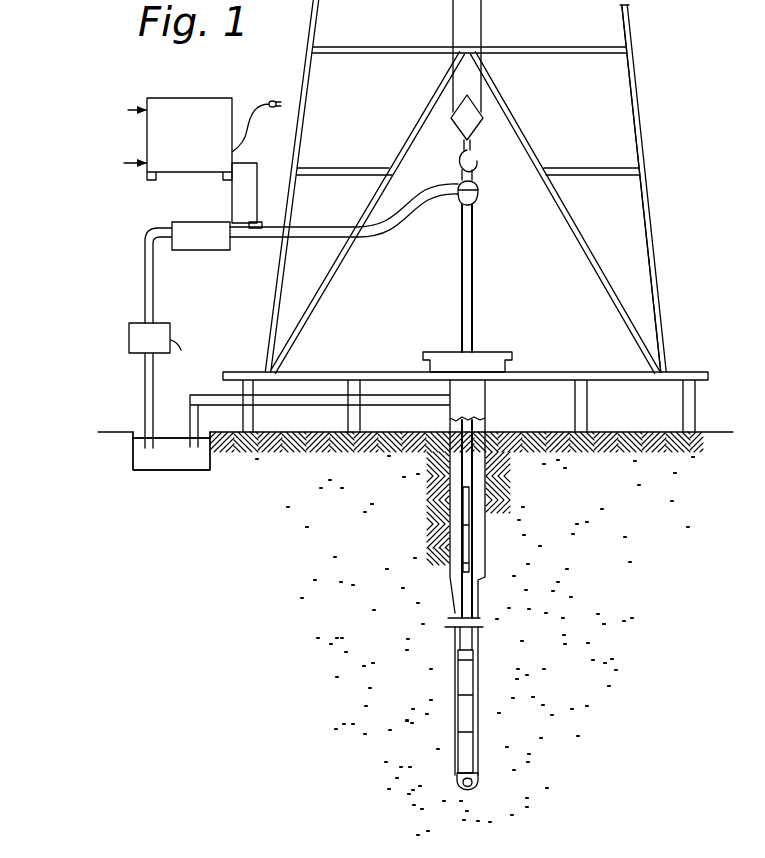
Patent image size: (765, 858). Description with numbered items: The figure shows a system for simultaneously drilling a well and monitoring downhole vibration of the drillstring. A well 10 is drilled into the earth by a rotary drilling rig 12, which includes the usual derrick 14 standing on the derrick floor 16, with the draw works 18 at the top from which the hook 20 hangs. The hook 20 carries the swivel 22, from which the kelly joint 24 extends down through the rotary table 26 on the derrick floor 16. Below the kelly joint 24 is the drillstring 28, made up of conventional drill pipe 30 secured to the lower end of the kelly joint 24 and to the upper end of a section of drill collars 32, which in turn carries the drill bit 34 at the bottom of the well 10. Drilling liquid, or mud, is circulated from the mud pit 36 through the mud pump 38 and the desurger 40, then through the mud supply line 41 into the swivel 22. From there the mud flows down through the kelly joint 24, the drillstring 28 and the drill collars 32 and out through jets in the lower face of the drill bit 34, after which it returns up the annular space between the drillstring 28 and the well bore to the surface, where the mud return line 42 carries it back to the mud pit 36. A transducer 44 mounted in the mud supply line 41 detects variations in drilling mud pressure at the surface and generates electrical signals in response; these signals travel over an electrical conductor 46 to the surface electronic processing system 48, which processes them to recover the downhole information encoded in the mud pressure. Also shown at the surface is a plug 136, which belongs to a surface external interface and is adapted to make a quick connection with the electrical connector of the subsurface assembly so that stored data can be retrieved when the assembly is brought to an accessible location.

The well 10 is at (452, 602).
The rotary drilling rig 12 is at (641, 77).
The derrick 14 is at (646, 131).
The derrick floor 16 is at (681, 370).
The draw works 18 is at (452, 22).
The hook 20 is at (473, 152).
The swivel 22 is at (458, 198).
The kelly joint 24 is at (475, 268).
The rotary table 26 is at (494, 351).
The drillstring 28 is at (476, 585).
The drill pipe 30 is at (467, 512).
The drill collars 32 is at (467, 675).
The drill bit 34 is at (477, 781).
The mud pit 36 is at (173, 469).
The mud pump 38 is at (171, 331).
The desurger 40 is at (200, 222).
The mud supply line 41 is at (372, 230).
The mud return line 42 is at (397, 405).
The transducer 44 is at (256, 222).
The electrical conductor 46 is at (257, 178).
The surface electronic processing system 48 is at (166, 99).
The plug 136 is at (273, 100).